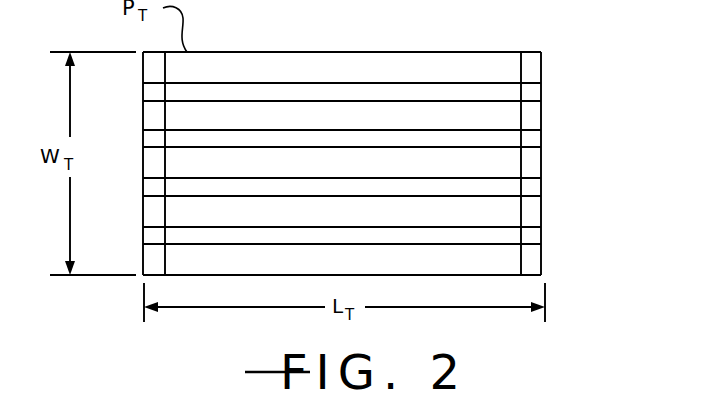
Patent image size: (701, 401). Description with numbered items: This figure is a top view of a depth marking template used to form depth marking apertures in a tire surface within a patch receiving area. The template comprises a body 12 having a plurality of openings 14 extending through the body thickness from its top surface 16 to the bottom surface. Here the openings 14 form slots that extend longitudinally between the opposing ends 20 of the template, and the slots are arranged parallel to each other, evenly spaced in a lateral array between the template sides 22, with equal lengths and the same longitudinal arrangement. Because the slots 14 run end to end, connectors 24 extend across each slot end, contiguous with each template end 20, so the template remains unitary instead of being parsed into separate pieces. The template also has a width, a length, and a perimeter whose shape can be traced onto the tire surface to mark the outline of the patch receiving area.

The body 12 is at (543, 257).
The openings 14 is at (330, 88).
The top surface 16 is at (427, 63).
The opposing ends 20 is at (543, 217).
The template sides 22 is at (255, 52).
The connectors 24 is at (536, 141).